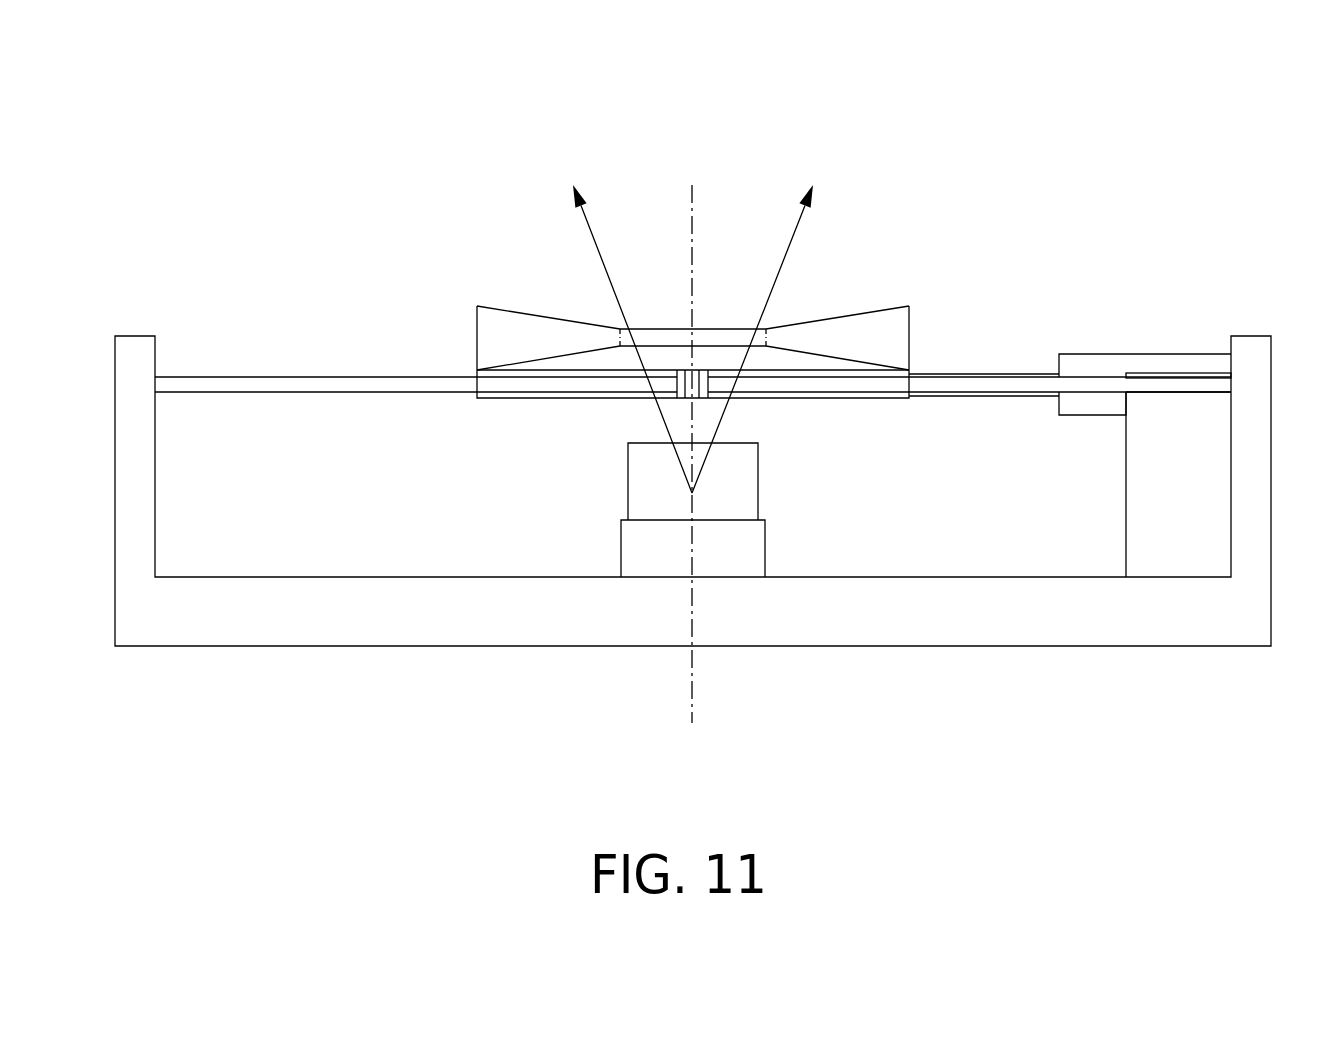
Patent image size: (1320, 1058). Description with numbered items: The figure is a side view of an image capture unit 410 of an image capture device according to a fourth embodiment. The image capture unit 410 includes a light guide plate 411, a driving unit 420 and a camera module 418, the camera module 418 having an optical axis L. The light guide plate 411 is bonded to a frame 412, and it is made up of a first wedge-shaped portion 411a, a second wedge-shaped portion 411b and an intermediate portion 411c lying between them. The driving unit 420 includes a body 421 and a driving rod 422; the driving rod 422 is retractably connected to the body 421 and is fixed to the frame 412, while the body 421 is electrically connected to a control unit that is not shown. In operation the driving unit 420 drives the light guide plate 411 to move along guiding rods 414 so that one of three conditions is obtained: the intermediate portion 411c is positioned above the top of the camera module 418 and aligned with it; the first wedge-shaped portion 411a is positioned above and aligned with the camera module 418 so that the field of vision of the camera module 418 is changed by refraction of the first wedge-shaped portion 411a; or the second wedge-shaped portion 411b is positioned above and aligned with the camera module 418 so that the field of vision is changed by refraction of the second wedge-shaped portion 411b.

The image capture unit 410 is at (884, 95).
The light guide plate 411 is at (916, 318).
The first wedge-shaped portion 411a is at (500, 328).
The second wedge-shaped portion 411b is at (873, 330).
The intermediate portion 411c is at (723, 340).
The frame 412 is at (504, 398).
The guiding rods 414 is at (309, 385).
The camera module 418 is at (743, 488).
The driving unit 420 is at (1284, 289).
The body 421 is at (1152, 365).
The driving rod 422 is at (1024, 373).